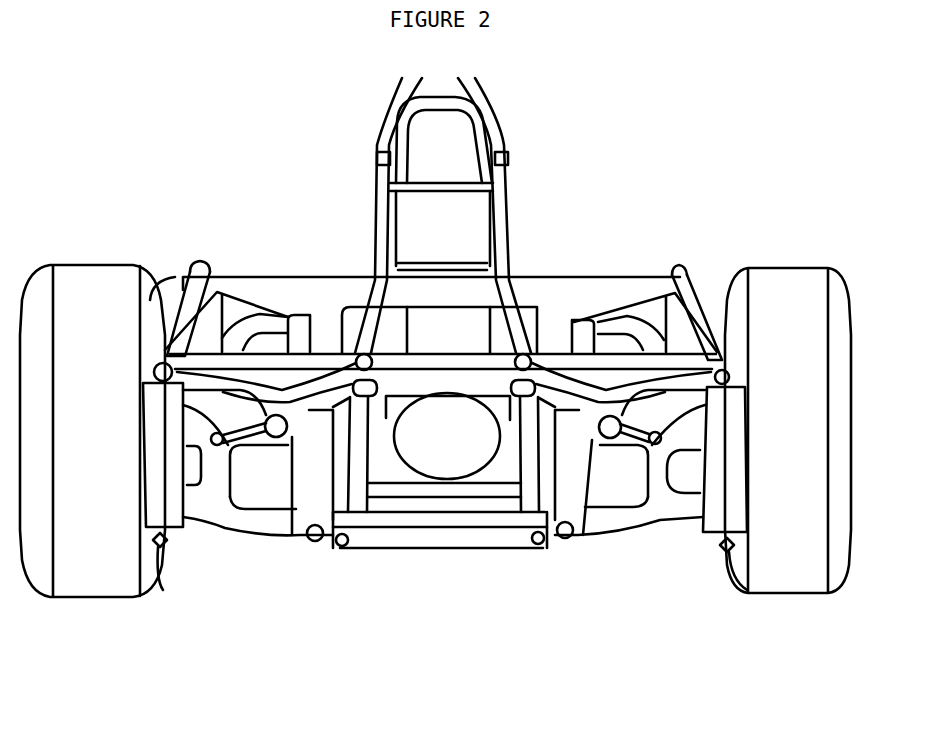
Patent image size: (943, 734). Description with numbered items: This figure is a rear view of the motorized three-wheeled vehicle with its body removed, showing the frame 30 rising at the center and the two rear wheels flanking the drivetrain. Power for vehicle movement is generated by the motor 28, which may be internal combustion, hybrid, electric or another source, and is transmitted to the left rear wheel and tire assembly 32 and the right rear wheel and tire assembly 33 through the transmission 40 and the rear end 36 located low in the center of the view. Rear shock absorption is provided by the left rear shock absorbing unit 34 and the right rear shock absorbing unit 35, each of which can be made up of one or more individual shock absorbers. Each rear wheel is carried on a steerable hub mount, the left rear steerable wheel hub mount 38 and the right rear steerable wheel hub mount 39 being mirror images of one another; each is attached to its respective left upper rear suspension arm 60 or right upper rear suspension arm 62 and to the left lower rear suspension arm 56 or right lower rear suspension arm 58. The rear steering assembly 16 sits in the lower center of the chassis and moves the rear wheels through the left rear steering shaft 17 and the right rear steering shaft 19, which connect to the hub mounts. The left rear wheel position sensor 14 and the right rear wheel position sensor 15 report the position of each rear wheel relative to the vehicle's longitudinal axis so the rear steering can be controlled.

The left rear wheel position sensor 14 is at (145, 445).
The right rear wheel position sensor 15 is at (740, 547).
The rear steering assembly 16 is at (395, 440).
The left rear steering shaft 17 is at (230, 480).
The right rear steering shaft 19 is at (676, 420).
The motor 28 is at (440, 160).
The frame 30 is at (375, 205).
The left rear wheel and tire assembly 32 is at (90, 385).
The right rear wheel and tire assembly 33 is at (790, 375).
The left rear shock absorbing unit 34 is at (210, 305).
The right rear shock absorbing unit 35 is at (673, 327).
The rear end 36 is at (448, 440).
The left rear steerable wheel hub mount 38 is at (150, 440).
The right rear steerable wheel hub mount 39 is at (745, 445).
The transmission 40 is at (453, 327).
The left lower rear suspension arm 56 is at (213, 487).
The right lower rear suspension arm 58 is at (685, 507).
The left upper rear suspension arm 60 is at (250, 317).
The right upper rear suspension arm 62 is at (627, 337).